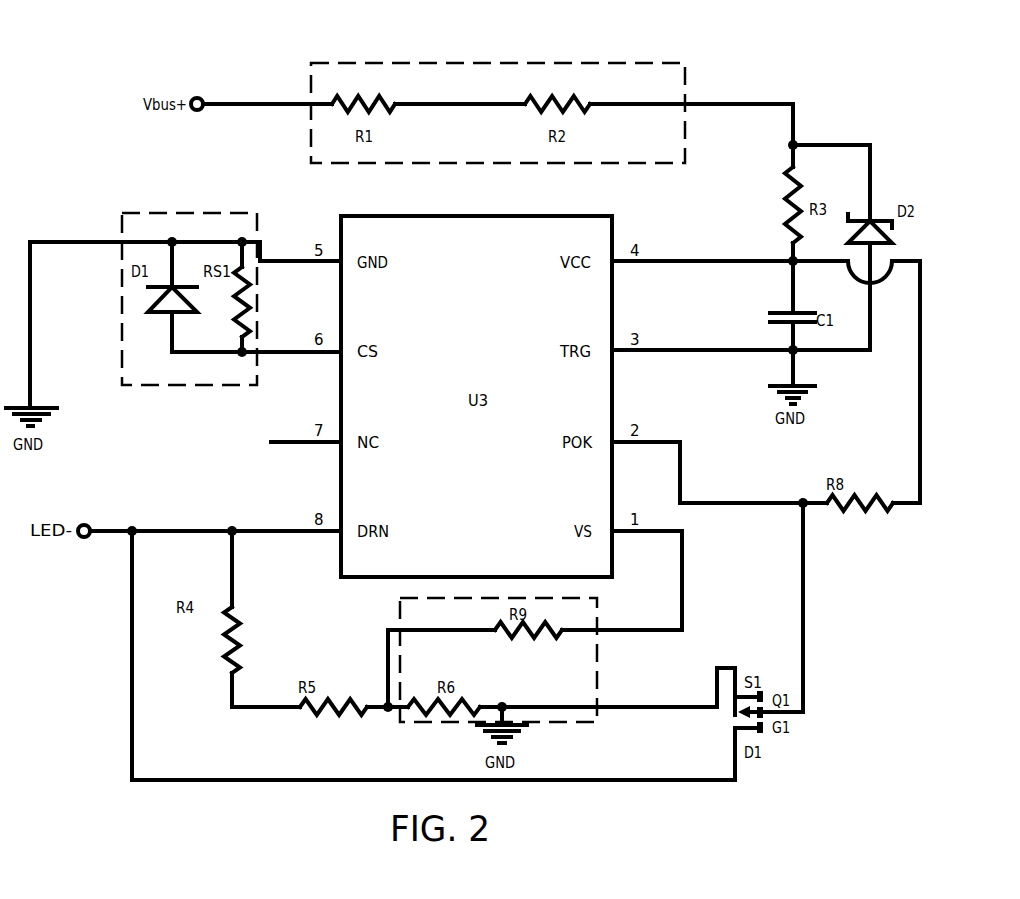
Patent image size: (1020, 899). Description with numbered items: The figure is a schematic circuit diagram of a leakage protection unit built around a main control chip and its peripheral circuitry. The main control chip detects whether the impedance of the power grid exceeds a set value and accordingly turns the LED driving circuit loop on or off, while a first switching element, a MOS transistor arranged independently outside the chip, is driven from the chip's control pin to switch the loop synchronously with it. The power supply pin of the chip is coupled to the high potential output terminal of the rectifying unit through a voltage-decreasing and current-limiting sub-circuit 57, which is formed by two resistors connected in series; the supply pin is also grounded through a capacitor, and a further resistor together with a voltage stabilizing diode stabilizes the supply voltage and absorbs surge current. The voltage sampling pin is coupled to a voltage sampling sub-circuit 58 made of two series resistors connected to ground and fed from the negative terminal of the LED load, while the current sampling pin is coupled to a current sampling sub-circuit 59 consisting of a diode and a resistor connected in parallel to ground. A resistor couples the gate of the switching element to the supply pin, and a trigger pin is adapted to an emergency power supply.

The voltage-decreasing and current-limiting sub-circuit 57 is at (680, 70).
The voltage sampling sub-circuit 58 is at (588, 683).
The current sampling sub-circuit 59 is at (137, 217).